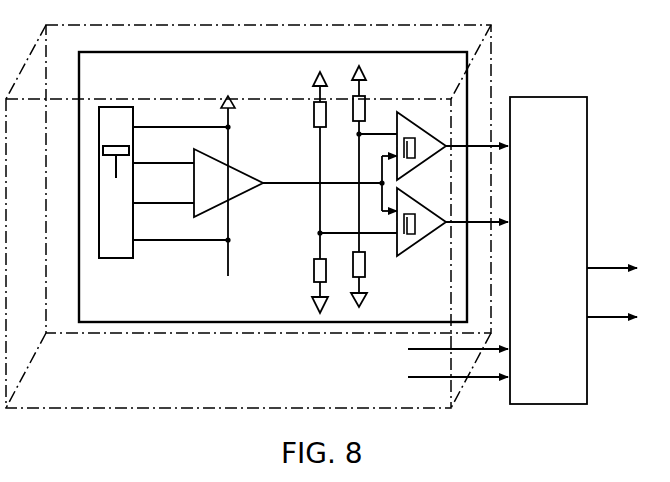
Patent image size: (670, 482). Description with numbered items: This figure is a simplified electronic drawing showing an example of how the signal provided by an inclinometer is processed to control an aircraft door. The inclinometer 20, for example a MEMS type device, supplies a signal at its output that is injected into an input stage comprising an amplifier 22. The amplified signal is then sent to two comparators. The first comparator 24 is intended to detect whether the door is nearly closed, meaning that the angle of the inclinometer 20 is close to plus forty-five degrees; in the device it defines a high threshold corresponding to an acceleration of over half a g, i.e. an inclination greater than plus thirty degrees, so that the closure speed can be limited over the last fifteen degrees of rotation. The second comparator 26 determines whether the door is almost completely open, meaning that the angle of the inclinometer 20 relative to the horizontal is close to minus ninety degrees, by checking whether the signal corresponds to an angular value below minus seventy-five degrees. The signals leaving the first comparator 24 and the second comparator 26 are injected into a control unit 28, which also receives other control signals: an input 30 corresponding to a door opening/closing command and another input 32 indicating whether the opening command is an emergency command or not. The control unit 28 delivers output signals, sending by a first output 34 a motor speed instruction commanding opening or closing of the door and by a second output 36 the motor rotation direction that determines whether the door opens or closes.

The inclinometer 20 is at (115, 259).
The amplifier 22 is at (243, 171).
The first comparator 24 is at (420, 166).
The second comparator 26 is at (410, 251).
The control unit 28 is at (572, 97).
The input 30 is at (446, 350).
The input 32 is at (446, 378).
The first output 34 is at (598, 268).
The second output 36 is at (598, 318).